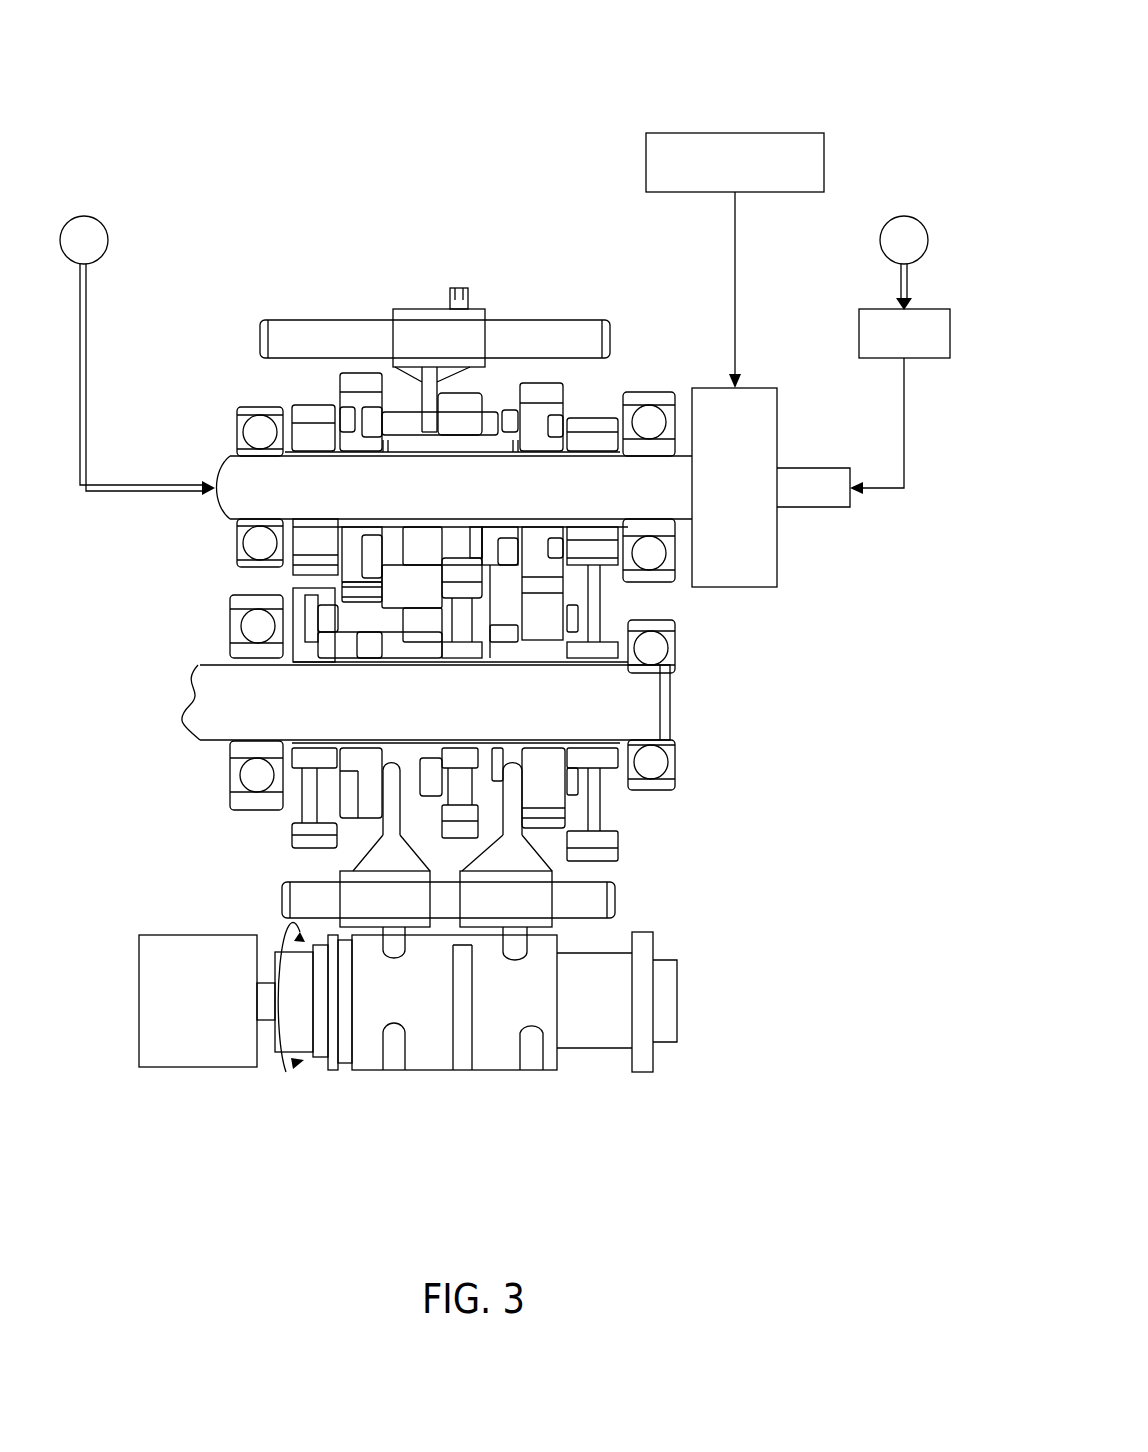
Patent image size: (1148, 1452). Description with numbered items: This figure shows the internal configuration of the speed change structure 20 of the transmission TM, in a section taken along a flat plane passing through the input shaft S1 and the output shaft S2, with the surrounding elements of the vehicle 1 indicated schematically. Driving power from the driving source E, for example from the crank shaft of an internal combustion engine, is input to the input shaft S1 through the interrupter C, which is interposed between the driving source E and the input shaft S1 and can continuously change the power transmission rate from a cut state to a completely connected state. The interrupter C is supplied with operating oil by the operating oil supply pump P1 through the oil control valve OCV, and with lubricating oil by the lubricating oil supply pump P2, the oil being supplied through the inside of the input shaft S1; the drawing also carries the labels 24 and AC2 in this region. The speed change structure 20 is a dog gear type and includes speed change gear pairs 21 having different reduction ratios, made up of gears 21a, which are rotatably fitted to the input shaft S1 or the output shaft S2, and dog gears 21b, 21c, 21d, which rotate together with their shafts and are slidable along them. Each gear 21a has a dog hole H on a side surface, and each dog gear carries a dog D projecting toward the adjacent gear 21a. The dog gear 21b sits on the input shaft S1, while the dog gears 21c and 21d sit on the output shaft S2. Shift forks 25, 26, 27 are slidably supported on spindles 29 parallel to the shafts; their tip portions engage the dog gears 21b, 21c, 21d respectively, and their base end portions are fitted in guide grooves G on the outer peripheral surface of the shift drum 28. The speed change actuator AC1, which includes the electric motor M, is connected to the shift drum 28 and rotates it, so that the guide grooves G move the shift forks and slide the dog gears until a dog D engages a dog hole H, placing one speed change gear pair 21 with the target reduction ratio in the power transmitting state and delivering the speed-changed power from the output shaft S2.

The vehicle 1 is at (880, 66).
The speed change structure 20 is at (235, 122).
The speed change gear pairs 21 is at (303, 393).
The gears 21a is at (345, 403).
The dog gear 21b is at (478, 400).
The dog gear 21c is at (550, 803).
The dog gear 21d is at (340, 802).
The gear train 24 is at (266, 388).
The shift fork 25 is at (425, 335).
The shift fork 26 is at (537, 903).
The shift fork 27 is at (373, 903).
The shift drum 28 is at (552, 1070).
The spindles 29 is at (612, 335).
The speed change actuator AC1 is at (202, 1070).
The second actuator AC2 is at (872, 192).
The interrupter C is at (778, 560).
The dog D is at (395, 418).
The driving source E is at (776, 133).
The guide grooves G is at (398, 1057).
The dog hole H is at (370, 413).
The electric motor M is at (160, 1005).
The oil control valve OCV is at (904, 333).
The operating oil supply pump P1 is at (905, 216).
The lubricating oil supply pump P2 is at (88, 216).
The input shaft S1 is at (215, 463).
The output shaft S2 is at (207, 697).
The transmission TM is at (765, 1172).